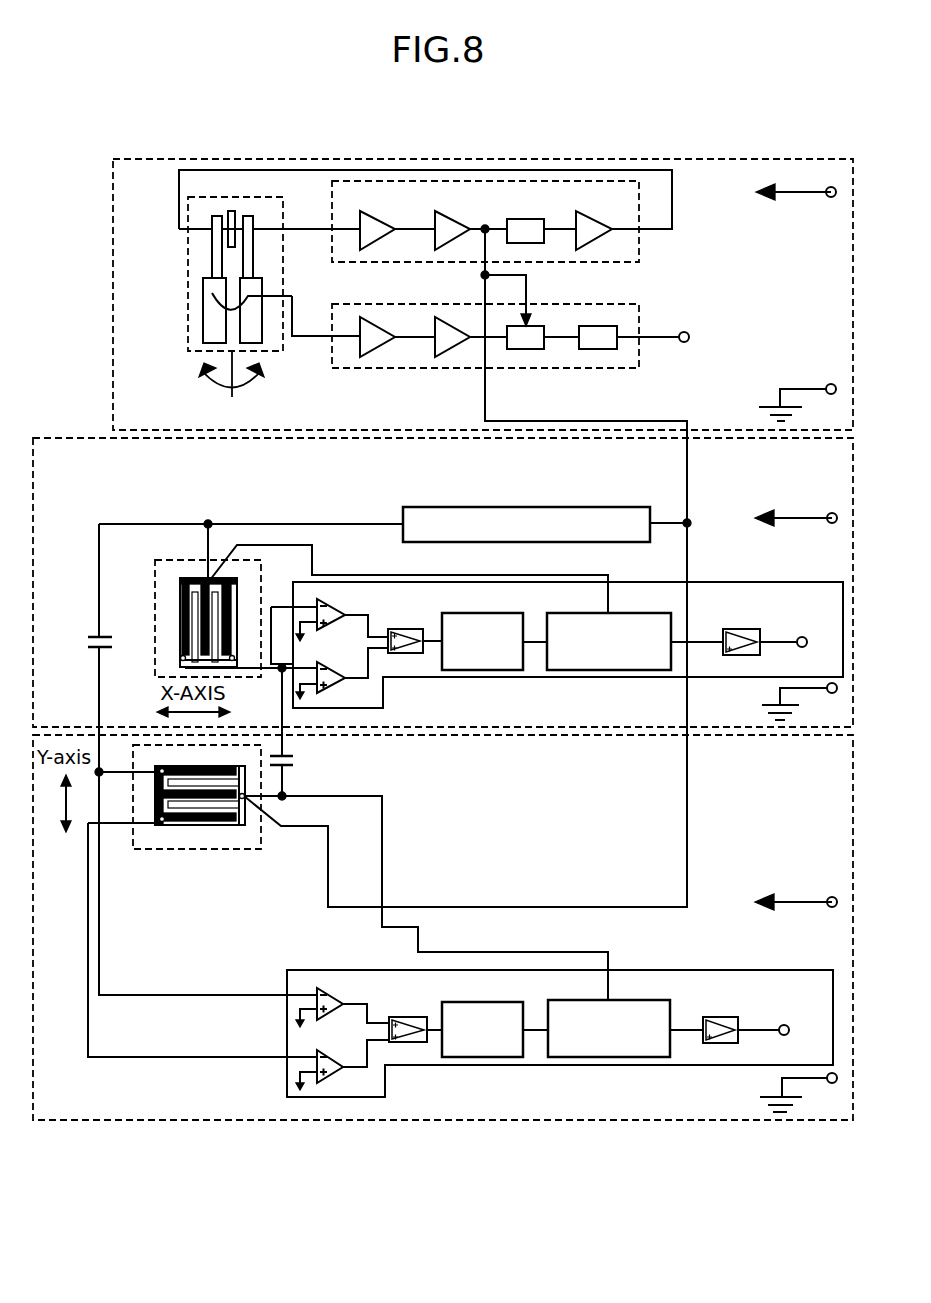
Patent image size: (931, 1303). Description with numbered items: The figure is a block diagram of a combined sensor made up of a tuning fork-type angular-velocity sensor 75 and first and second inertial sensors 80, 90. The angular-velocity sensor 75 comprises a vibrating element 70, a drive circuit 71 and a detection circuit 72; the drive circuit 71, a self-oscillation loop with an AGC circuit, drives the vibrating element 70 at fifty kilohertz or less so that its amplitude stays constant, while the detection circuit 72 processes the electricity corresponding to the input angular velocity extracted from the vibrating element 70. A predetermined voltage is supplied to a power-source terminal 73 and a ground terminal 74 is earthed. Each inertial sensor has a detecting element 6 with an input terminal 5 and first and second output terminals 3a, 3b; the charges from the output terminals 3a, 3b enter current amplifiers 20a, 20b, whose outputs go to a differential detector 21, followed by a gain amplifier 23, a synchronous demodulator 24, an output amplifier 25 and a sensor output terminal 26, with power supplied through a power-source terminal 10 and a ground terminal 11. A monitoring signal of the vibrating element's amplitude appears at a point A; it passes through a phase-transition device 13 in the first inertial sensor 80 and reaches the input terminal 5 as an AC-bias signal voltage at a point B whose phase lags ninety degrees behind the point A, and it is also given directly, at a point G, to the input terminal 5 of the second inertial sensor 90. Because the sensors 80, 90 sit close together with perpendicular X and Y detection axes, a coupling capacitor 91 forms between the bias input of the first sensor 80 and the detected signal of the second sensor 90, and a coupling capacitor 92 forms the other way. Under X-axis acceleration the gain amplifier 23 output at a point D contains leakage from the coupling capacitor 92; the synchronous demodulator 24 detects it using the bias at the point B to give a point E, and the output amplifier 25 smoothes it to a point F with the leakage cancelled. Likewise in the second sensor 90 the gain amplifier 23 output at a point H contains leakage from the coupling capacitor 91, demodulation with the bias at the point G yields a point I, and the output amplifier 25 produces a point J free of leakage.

The tuning fork-type angular-velocity sensor 75 is at (195, 158).
The drive circuit 71 is at (410, 180).
The detection circuit 72 is at (414, 369).
The vibrating element 70 is at (188, 312).
The power-source terminal 73 is at (829, 198).
The ground terminal 74 is at (829, 384).
The first inertial sensor 80 is at (77, 437).
The second inertial sensor 90 is at (120, 1120).
The phase-transition device 13 is at (480, 506).
The detecting element 6 is at (165, 560).
The input terminal 5 is at (206, 578).
The first output terminal 3a is at (182, 660).
The second output terminal 3b is at (234, 661).
The coupling capacitor 91 is at (88, 635).
The coupling capacitor 92 is at (294, 770).
The current amplifier 20a is at (341, 604).
The current amplifier 20b is at (322, 692).
The differential detector 21 is at (417, 654).
The gain amplifier 23 is at (500, 671).
The synchronous demodulator 24 is at (610, 671).
The output amplifier 25 is at (742, 656).
The sensor output terminal 26 is at (805, 637).
The power-source terminal 10 is at (829, 524).
The ground terminal 11 is at (831, 694).
The point A is at (486, 225).
The point B is at (350, 523).
The point D is at (533, 638).
The point E is at (708, 640).
The point F is at (775, 640).
The point G is at (398, 906).
The point H is at (533, 1028).
The point I is at (688, 1028).
The point J is at (750, 1028).